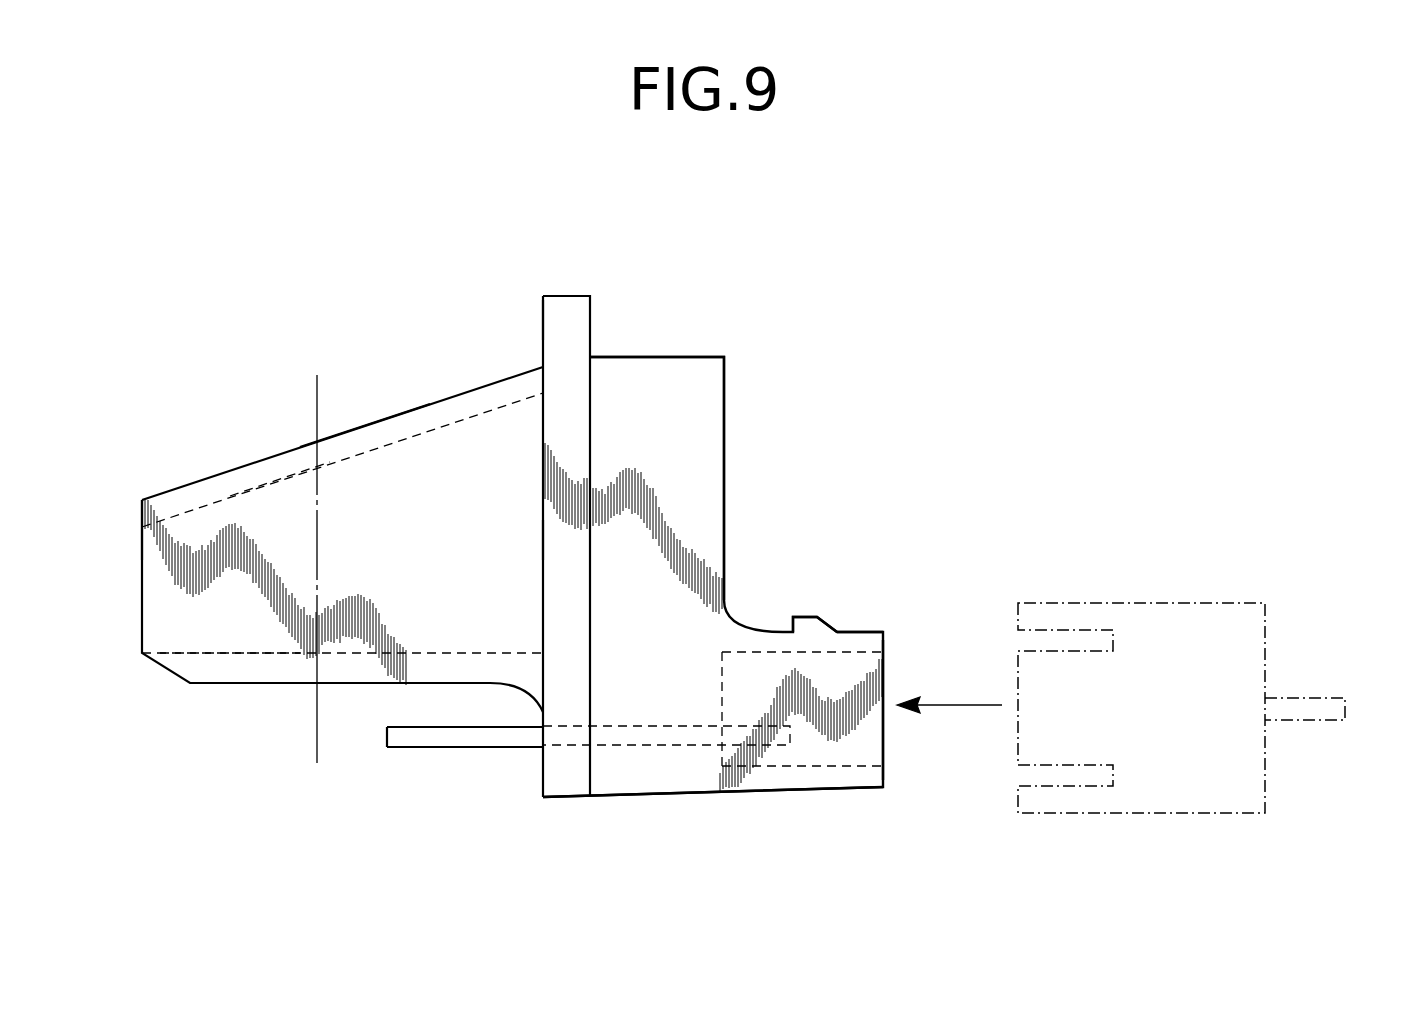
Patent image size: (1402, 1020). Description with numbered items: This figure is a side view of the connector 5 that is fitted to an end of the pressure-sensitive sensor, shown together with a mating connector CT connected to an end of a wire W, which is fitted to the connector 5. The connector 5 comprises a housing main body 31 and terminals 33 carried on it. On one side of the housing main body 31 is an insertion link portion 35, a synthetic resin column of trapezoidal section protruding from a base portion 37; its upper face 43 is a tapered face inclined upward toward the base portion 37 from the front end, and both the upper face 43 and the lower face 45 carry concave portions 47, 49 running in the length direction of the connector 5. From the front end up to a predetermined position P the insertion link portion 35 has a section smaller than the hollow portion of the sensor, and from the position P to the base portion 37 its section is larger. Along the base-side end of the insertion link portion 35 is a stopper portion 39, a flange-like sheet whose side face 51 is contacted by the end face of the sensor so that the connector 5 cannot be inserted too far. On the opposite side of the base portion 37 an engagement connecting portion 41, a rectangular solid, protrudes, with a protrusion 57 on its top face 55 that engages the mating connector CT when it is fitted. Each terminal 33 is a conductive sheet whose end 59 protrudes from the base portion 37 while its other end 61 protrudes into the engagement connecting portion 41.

The connector 5 is at (763, 332).
The housing main body 31 is at (655, 357).
The terminal 33 is at (510, 753).
The insertion link portion 35 is at (142, 500).
The base portion 37 is at (543, 535).
The stopper portion 39 is at (565, 296).
The engagement connecting portion 41 is at (865, 727).
The upper face 43 is at (362, 427).
The lower face 45 is at (313, 684).
The concave portion 47 is at (273, 480).
The concave portion 49 is at (218, 654).
The side face 51 is at (543, 323).
The top face 55 is at (866, 631).
The protrusion 57 is at (806, 616).
The end of terminal 59 is at (400, 750).
The other end of terminal 61 is at (665, 746).
The predetermined position P is at (317, 380).
The mating connector CT is at (1140, 813).
The wire W is at (1310, 722).